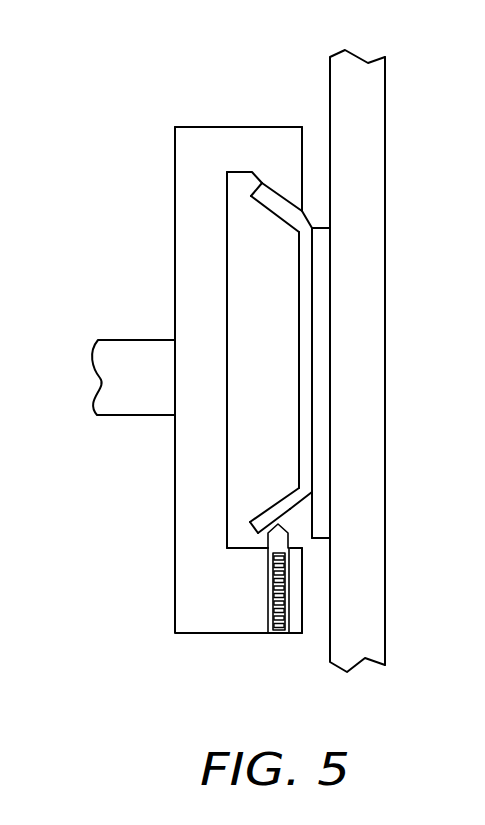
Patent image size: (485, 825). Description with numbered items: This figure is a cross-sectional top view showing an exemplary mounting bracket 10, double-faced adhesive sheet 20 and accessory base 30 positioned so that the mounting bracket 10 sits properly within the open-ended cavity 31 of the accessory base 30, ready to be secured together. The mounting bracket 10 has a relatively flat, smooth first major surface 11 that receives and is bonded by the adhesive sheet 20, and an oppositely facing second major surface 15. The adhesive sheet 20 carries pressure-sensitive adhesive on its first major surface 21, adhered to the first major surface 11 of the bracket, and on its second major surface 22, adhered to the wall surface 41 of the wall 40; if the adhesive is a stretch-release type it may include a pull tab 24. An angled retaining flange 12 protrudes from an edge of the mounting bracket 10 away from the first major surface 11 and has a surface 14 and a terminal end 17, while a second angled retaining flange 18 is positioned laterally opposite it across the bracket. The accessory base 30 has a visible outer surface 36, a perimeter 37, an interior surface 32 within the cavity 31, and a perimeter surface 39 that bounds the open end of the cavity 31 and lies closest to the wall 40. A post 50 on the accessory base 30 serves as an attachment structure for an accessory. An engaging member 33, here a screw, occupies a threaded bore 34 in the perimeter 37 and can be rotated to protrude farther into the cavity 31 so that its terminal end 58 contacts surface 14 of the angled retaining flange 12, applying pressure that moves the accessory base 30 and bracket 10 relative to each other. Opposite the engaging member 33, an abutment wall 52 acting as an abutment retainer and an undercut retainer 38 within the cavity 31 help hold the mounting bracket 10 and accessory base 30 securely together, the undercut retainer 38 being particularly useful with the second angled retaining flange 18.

The mounting bracket 10 is at (306, 252).
The first major surface 11 is at (313, 304).
The angled retaining flange 12 is at (297, 504).
The first major surface 14 is at (291, 498).
The second major surface 15 is at (300, 447).
The terminal end 17 is at (248, 523).
The second angled retaining flange 18 is at (266, 208).
The double-faced adhesive sheet 20 is at (320, 347).
The first major surface 21 is at (313, 392).
The second major surface 22 is at (330, 440).
The pull tab 24 is at (322, 528).
The accessory base 30 is at (203, 143).
The open-ended cavity 31 is at (237, 255).
The interior surface 32 is at (230, 312).
The engaging member 33 is at (273, 612).
The threaded bore 34 is at (268, 601).
The outer surface 36 is at (176, 172).
The perimeter 37 is at (183, 126).
The undercut retainer 38 is at (262, 186).
The perimeter surface 39 is at (303, 158).
The wall 40 is at (372, 88).
The wall surface 41 is at (362, 170).
The post 50 is at (121, 350).
The abutment wall 52 is at (234, 172).
The terminal end 58 is at (273, 521).